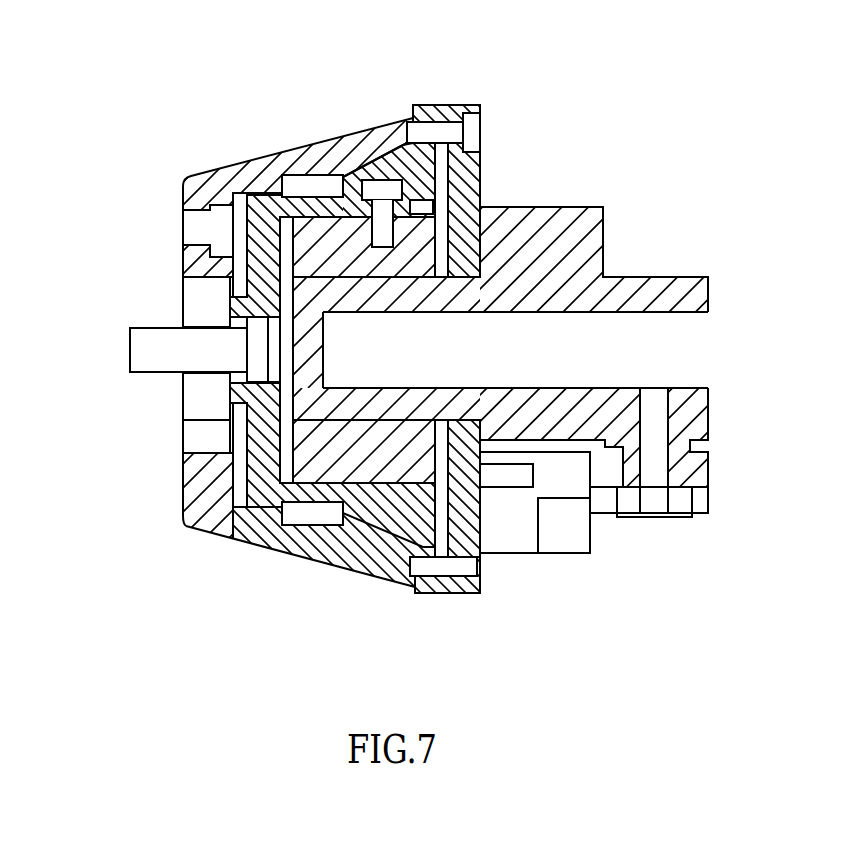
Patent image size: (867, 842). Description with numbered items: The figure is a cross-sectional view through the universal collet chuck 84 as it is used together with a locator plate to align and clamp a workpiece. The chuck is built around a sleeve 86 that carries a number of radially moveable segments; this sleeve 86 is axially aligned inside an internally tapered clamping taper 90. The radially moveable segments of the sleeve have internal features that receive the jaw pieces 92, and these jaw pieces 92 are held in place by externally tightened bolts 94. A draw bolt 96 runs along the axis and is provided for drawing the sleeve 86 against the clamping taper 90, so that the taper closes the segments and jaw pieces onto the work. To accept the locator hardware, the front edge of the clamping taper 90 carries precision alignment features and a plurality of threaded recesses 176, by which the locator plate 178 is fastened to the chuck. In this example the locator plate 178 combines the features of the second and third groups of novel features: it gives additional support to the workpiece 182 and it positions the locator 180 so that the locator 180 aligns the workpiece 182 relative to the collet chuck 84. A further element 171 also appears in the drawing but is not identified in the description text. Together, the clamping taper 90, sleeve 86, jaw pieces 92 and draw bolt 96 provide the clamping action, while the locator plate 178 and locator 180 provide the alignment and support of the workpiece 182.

The collet chuck 84 is at (449, 359).
The sleeve 86 is at (368, 512).
The clamping taper 90 is at (243, 530).
The jaw pieces 92 is at (325, 248).
The bolts 94 is at (380, 188).
The draw bolt 96 is at (168, 360).
The set screw 171 is at (423, 574).
The threaded recesses 176 is at (450, 130).
The locator plate 178 is at (470, 187).
The locator 180 is at (592, 513).
The workpiece 182 is at (593, 247).